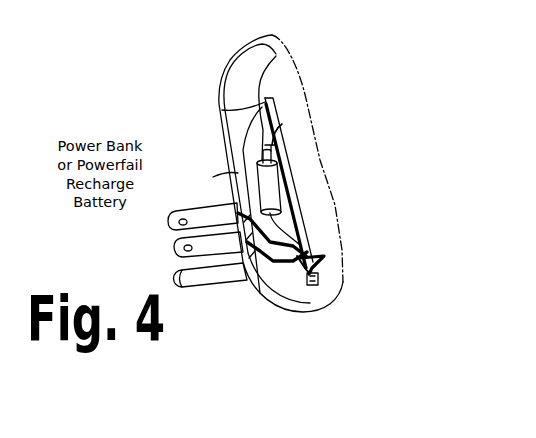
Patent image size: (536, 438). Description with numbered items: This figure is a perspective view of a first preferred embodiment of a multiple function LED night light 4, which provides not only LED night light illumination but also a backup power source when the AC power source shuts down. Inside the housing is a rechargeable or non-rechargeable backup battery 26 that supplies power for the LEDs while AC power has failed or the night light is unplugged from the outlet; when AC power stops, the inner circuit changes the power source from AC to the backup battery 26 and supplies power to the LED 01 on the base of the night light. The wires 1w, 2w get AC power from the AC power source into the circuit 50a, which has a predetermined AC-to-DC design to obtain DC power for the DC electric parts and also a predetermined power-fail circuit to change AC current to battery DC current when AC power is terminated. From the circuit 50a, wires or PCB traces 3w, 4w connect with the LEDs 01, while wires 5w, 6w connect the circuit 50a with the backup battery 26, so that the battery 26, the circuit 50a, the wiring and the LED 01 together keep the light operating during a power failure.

The plug housing 4 is at (303, 80).
The backup battery 26 is at (262, 190).
The circuit 50a is at (293, 190).
The wire 1w is at (246, 214).
The wire 2w is at (268, 266).
The wire or PCB trace 3w is at (298, 262).
The wire or PCB trace 4w is at (330, 263).
The wire 5w is at (307, 223).
The wire 6w is at (282, 124).
The LED 01 is at (305, 278).